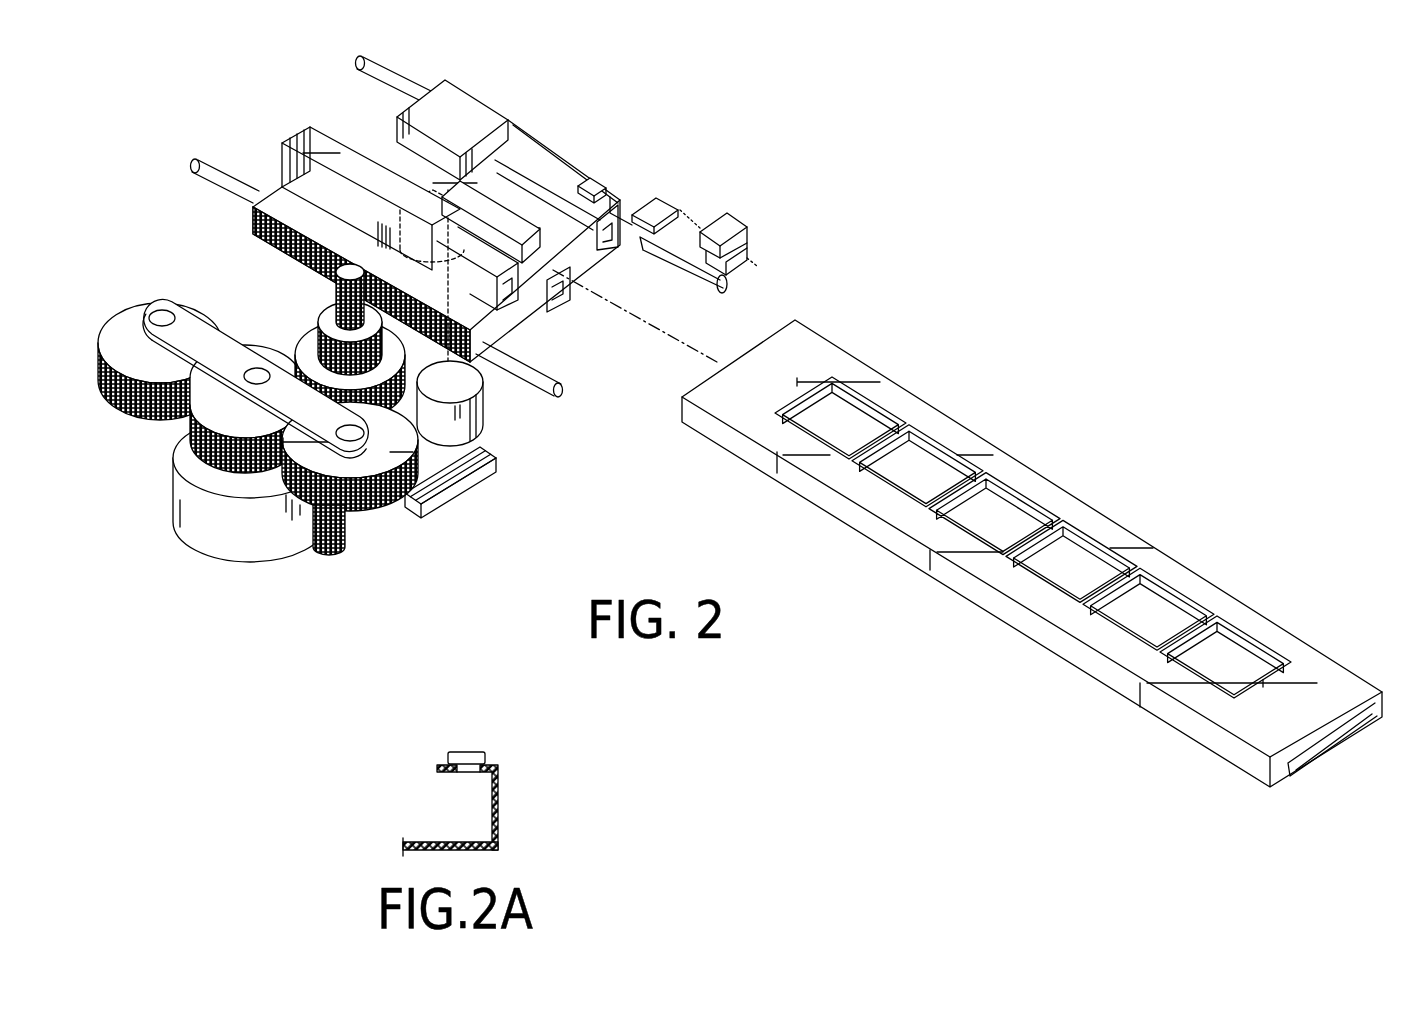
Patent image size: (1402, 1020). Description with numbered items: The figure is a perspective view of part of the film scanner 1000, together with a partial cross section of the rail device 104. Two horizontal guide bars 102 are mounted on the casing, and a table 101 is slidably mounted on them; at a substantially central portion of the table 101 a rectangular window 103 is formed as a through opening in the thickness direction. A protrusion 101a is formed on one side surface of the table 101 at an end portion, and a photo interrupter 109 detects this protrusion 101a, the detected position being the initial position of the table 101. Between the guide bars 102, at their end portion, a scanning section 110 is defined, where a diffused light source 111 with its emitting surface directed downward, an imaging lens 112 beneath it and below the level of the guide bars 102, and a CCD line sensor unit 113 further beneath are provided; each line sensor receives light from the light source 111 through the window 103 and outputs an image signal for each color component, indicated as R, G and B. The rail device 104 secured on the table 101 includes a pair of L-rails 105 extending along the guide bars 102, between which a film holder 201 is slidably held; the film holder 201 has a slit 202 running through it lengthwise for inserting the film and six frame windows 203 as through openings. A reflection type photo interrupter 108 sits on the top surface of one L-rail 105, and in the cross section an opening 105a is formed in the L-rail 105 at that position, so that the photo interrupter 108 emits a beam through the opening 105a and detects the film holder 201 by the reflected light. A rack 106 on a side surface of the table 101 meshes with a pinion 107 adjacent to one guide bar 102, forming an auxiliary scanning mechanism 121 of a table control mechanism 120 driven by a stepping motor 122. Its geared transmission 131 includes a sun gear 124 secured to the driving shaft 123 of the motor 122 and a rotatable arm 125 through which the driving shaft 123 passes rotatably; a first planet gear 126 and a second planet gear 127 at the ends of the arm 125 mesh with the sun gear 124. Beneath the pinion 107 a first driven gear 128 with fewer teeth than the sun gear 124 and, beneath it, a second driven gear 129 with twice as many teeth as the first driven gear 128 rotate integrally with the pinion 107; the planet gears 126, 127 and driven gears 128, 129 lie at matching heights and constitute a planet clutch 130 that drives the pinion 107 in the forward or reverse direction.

In FIG. 2, the table 101 is at (290, 210).
In FIG. 2, the protrusion 101a is at (667, 204).
In FIG. 2, the guide bars 102 is at (356, 72).
In FIG. 2, the window 103 is at (503, 228).
In FIG. 2, the rail device 104 is at (562, 303).
In FIG. 2, the L-rails 105 is at (548, 160).
In FIG. 2A, the L-rails 105 is at (498, 812).
In FIG. 2A, the opening 105a is at (455, 778).
In FIG. 2, the rack 106 is at (272, 245).
In FIG. 2, the pinion 107 is at (335, 297).
In FIG. 2, the reflection type photo interrupter 108 is at (632, 163).
In FIG. 2A, the reflection type photo interrupter 108 is at (460, 752).
In FIG. 2, the photo interrupter 109 is at (733, 222).
In FIG. 2, the scanning section 110 is at (532, 136).
In FIG. 2, the diffused light source 111 is at (474, 118).
In FIG. 2, the imaging lens 112 is at (484, 404).
In FIG. 2, the CCD line sensor unit 113 is at (476, 494).
In FIG. 2, the table control mechanism 120 is at (248, 433).
In FIG. 2, the auxiliary scanning mechanism 121 is at (250, 303).
In FIG. 2, the stepping motor 122 is at (238, 540).
In FIG. 2, the driving shaft 123 is at (257, 368).
In FIG. 2, the sun gear 124 is at (190, 446).
In FIG. 2, the rotatable arm 125 is at (178, 343).
In FIG. 2, the first planet gear 126 is at (370, 505).
In FIG. 2, the second planet gear 127 is at (128, 402).
In FIG. 2, the first driven gear 128 is at (330, 245).
In FIG. 2, the second driven gear 129 is at (463, 263).
In FIG. 2, the planet clutch 130 is at (149, 294).
In FIG. 2, the geared transmission 131 is at (172, 544).
In FIG. 2, the film holder 201 is at (1032, 558).
In FIG. 2, the slit 202 is at (1316, 760).
In FIG. 2, the frame windows 203 is at (1072, 567).
In FIG. 2, the film scanner 1000 is at (700, 114).
In FIG. 2, the red filter R is at (478, 472).
In FIG. 2, the green filter G is at (462, 497).
In FIG. 2, the blue filter B is at (448, 505).